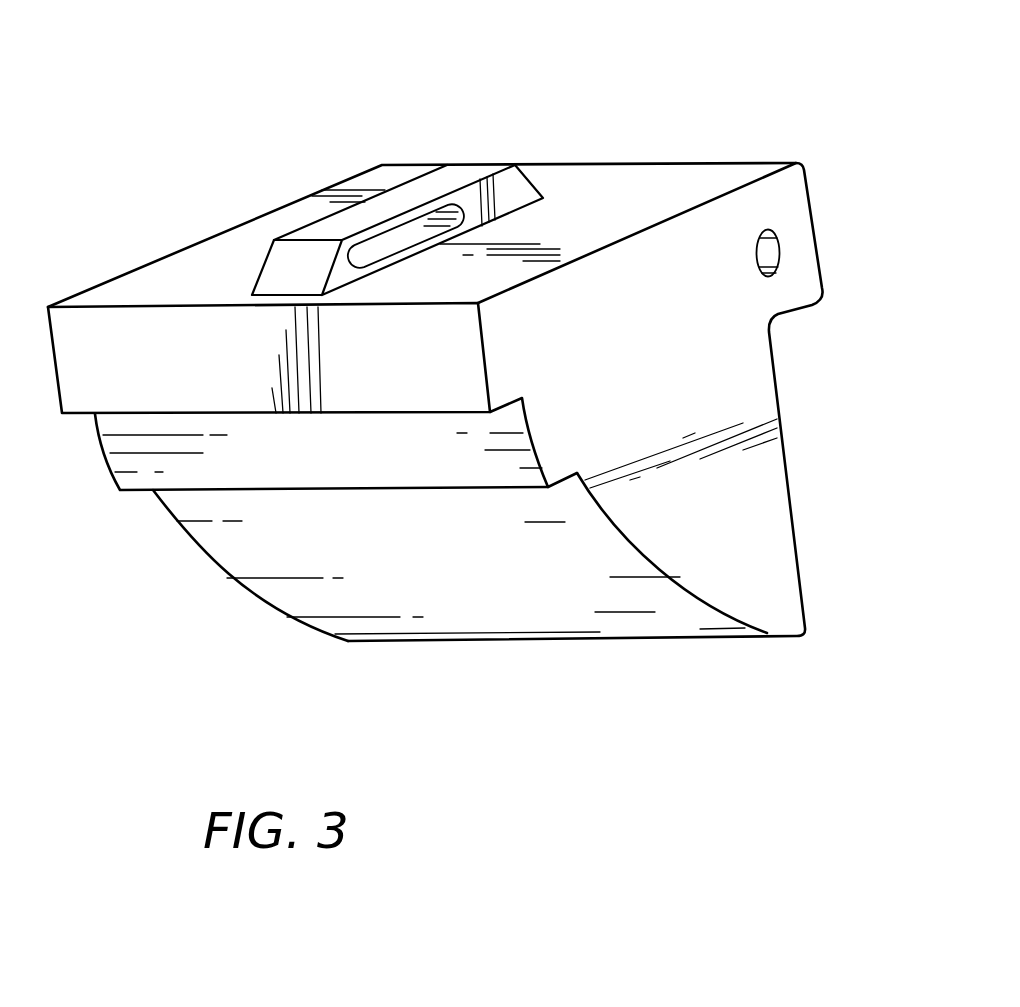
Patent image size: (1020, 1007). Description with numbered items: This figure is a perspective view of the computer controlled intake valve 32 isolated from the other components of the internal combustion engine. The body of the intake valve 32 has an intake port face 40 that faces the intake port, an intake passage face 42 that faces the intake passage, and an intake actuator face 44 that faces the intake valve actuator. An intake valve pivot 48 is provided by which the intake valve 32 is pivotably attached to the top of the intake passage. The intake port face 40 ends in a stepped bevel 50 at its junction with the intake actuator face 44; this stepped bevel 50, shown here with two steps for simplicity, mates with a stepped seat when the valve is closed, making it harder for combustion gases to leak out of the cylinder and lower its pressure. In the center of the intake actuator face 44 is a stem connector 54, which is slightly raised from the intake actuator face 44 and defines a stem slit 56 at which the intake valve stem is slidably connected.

The intake valve 32 is at (612, 100).
The intake port face 40 is at (430, 547).
The intake passage face 42 is at (789, 460).
The intake actuator face 44 is at (612, 209).
The intake valve pivot 48 is at (767, 254).
The stepped bevel 50 is at (57, 432).
The stem connector 54 is at (424, 193).
The stem slit 56 is at (376, 248).